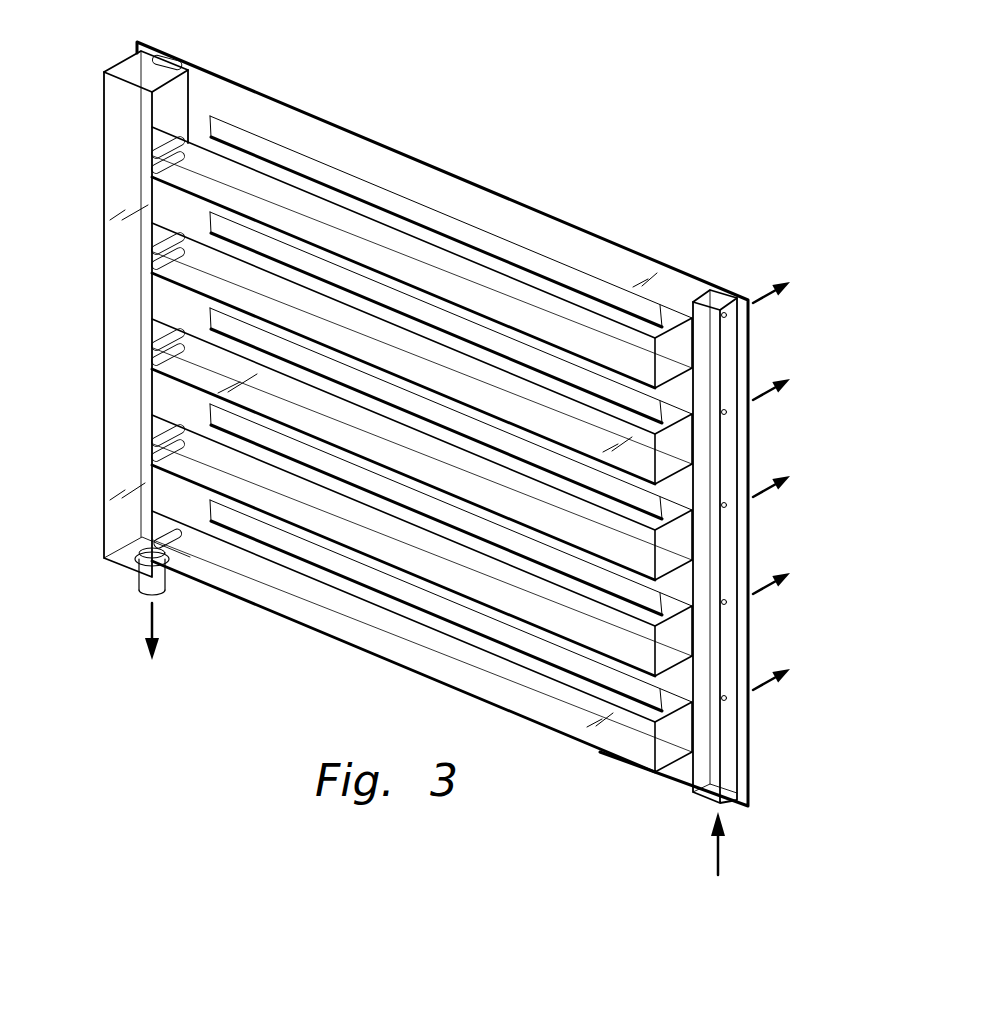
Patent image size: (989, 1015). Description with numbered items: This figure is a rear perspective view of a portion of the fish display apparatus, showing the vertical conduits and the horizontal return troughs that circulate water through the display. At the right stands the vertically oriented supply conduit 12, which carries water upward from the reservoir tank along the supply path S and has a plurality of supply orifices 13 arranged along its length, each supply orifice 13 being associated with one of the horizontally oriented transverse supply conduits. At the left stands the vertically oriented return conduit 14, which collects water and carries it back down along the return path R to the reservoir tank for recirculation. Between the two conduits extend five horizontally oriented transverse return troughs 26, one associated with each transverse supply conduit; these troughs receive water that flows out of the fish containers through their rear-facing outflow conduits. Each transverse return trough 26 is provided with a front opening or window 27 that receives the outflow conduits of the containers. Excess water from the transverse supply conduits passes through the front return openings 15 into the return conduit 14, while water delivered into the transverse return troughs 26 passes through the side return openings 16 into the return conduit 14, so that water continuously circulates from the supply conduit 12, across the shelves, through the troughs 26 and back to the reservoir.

The supply conduit 12 is at (728, 745).
The supply orifices 13 is at (725, 600).
The return conduit 14 is at (121, 153).
The front return openings 15 is at (178, 170).
The side return openings 16 is at (178, 440).
The transverse return troughs 26 is at (635, 650).
The front openings 27 is at (540, 370).
The supply path S is at (765, 480).
The return path R is at (150, 620).